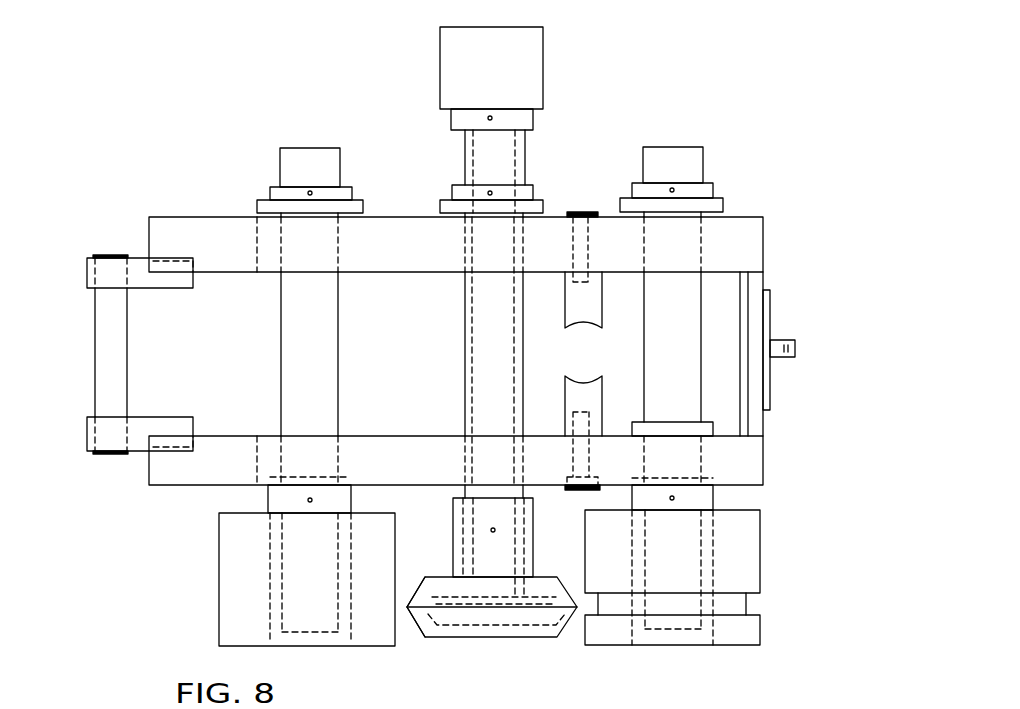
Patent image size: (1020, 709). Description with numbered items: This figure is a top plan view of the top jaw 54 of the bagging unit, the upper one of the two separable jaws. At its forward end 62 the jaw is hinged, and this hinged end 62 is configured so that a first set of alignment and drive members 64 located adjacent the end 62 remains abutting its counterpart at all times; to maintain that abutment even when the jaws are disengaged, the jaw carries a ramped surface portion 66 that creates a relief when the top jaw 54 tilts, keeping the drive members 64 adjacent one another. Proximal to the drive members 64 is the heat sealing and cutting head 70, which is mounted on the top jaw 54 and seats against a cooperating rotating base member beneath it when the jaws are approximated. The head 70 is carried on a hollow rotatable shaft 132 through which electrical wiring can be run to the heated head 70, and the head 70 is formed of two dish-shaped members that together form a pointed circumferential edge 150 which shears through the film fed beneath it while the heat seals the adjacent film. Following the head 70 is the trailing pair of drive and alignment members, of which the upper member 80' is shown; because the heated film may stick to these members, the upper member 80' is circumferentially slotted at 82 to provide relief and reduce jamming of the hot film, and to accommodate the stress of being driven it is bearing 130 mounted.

The top jaw 54 is at (779, 249).
The forward end 62 is at (86, 329).
The first set of alignment and drive members 64 is at (366, 648).
The ramped surface portion 66 is at (180, 486).
The heat sealing and cutting head 70 is at (507, 638).
The upper drive and alignment member 80' is at (672, 598).
The circumferential slot 82 is at (753, 604).
The bearing 130 is at (800, 359).
The hollow rotatable shaft 132 is at (463, 365).
The pointed circumferential edge 150 is at (410, 608).